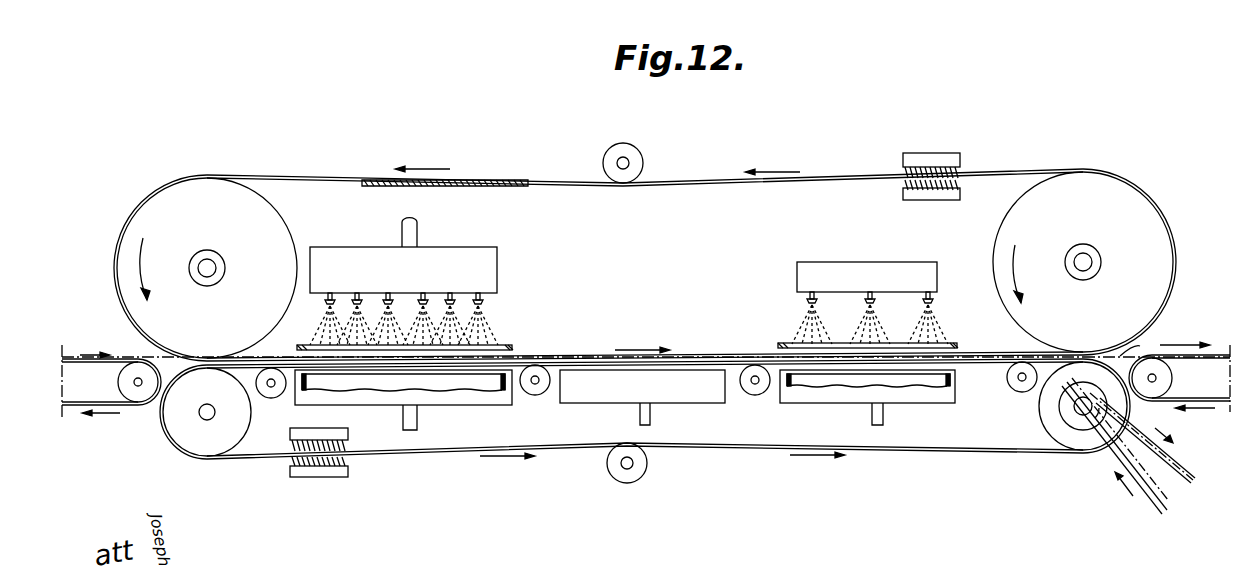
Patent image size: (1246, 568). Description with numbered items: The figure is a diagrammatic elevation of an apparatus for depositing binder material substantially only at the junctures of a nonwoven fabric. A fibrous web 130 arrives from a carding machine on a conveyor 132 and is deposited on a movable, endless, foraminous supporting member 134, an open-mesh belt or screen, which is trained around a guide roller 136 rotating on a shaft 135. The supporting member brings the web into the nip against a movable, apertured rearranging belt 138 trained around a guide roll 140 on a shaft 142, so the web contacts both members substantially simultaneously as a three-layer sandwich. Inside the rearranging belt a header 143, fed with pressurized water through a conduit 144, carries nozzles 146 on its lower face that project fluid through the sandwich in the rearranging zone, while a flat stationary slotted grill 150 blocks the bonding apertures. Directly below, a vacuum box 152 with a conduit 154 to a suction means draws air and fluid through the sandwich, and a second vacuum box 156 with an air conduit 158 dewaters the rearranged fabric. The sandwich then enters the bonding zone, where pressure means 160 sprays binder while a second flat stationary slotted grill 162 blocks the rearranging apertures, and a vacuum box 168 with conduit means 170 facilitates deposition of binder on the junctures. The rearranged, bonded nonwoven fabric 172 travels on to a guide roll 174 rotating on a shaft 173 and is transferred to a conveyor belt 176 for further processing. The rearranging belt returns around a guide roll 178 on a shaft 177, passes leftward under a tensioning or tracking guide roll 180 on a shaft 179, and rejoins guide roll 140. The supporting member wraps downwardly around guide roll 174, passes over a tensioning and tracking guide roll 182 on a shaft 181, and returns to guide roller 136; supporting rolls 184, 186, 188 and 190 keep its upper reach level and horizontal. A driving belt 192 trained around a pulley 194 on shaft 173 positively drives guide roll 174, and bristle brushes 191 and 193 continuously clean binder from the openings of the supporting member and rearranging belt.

The fibrous web 130 is at (98, 346).
The conveyor 132 is at (118, 405).
The foraminous supporting member 134 is at (462, 456).
The shaft 135 is at (205, 418).
The guide roller 136 is at (200, 460).
The rearranging belt 138 is at (470, 182).
The guide roll 140 is at (276, 236).
The shaft 142 is at (210, 242).
The header 143 is at (497, 257).
The conduit 144 is at (417, 228).
The nozzles 146 is at (322, 304).
The stationary slotted grill 150 is at (512, 347).
The vacuum box 152 is at (500, 405).
The conduit 154 is at (417, 424).
The vacuum box 156 is at (624, 388).
The air conduit 158 is at (650, 420).
The pressure means 160 is at (858, 262).
The stationary slotted grill 162 is at (778, 344).
The vacuum box 168 is at (843, 393).
The conduit means 170 is at (883, 419).
The rearranged, bonded nonwoven fabric 172 is at (1148, 348).
The shaft 173 is at (1074, 408).
The guide roll 174 is at (1050, 440).
The conveyor belt 176 is at (1218, 401).
The shaft 177 is at (1095, 258).
The guide roll 178 is at (1097, 196).
The shaft 179 is at (629, 163).
The tensioning or tracking guide roll 180 is at (628, 148).
The shaft 181 is at (633, 463).
The tensioning and tracking guide roll 182 is at (622, 483).
The supporting roll 184 is at (272, 398).
The supporting roll 186 is at (543, 393).
The supporting roll 188 is at (757, 395).
The supporting roll 190 is at (1012, 385).
The bristle brush 191 is at (330, 477).
The driving belt 192 is at (1185, 484).
The bristle brush 193 is at (932, 153).
The pulley 194 is at (1078, 440).